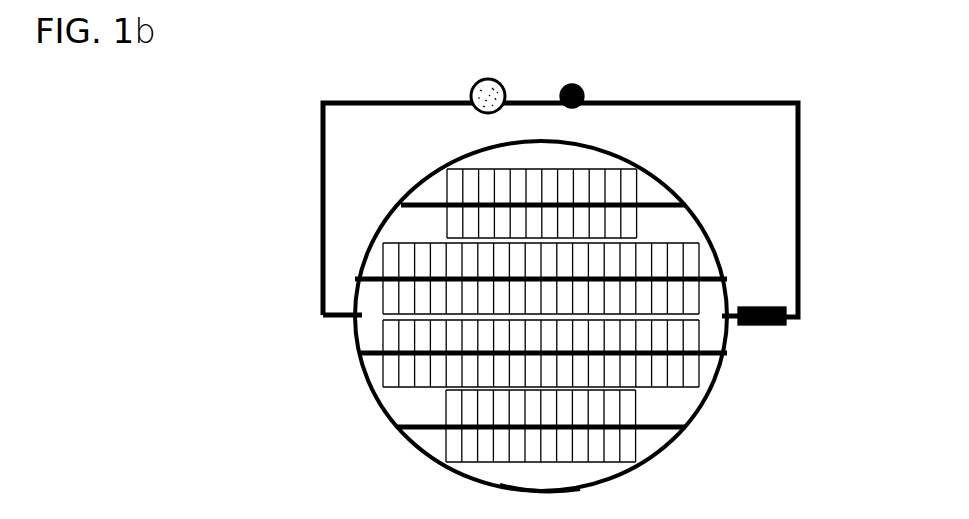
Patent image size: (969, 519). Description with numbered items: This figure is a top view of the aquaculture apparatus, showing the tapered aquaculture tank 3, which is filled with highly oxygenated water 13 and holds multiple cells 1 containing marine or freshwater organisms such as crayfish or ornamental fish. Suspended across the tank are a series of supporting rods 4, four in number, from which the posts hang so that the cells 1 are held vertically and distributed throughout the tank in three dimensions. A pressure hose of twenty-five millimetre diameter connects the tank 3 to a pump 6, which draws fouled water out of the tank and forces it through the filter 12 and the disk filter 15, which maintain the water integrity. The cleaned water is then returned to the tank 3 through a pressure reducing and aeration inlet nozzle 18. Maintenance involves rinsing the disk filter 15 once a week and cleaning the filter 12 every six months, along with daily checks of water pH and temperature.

The cells 1 is at (655, 241).
The tapered aquaculture tank 3 is at (358, 402).
The supporting rods 4 is at (701, 197).
The pump 6 is at (796, 329).
The filter 12 is at (465, 73).
The highly oxygenated water 13 is at (570, 474).
The disk filter 15 is at (572, 67).
The pressure reducing and aeration inlet nozzle 18 is at (339, 332).